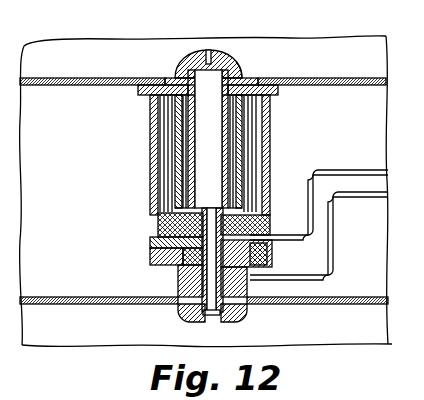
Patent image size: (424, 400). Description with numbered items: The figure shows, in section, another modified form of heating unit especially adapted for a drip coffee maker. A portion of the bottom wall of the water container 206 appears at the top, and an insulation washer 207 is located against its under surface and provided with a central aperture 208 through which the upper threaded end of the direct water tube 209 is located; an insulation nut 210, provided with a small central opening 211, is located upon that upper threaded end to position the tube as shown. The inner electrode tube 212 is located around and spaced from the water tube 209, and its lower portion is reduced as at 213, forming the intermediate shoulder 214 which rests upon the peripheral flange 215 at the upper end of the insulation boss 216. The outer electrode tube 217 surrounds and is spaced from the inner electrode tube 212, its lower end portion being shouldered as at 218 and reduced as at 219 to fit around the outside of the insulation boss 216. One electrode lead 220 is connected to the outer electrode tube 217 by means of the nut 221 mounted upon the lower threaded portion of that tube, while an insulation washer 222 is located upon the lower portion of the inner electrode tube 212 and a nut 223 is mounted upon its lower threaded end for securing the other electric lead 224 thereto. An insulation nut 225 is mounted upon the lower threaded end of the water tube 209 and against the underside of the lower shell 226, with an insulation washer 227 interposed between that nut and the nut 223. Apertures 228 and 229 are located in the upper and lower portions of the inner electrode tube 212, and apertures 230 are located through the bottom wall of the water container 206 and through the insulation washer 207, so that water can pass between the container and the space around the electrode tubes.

The bottom wall of the water container 206 is at (318, 78).
The insulation washer 207 is at (265, 80).
The central aperture 208 is at (241, 76).
The direct water tube 209 is at (228, 128).
The insulation nut 210 is at (183, 69).
The small central opening 211 is at (213, 52).
The inner electrode tube 212 is at (243, 157).
The reduced lower portion 213 is at (262, 222).
The intermediate shoulder 214 is at (230, 212).
The peripheral flange 215 is at (158, 225).
The insulation boss 216 is at (152, 263).
The outer electrode tube 217 is at (152, 167).
The shouldered lower end portion 218 is at (152, 241).
The reduced lower end portion 219 is at (176, 270).
The electrode lead 220 is at (338, 170).
The nut 221 is at (270, 257).
The insulation washer 222 is at (262, 304).
The nut 223 is at (246, 309).
The electric lead 224 is at (333, 279).
The insulation nut 225 is at (186, 315).
The lower shell 226 is at (89, 305).
The insulation washer 227 is at (178, 300).
The apertures 228 is at (175, 111).
The apertures 229 is at (178, 205).
The apertures 230 is at (140, 90).